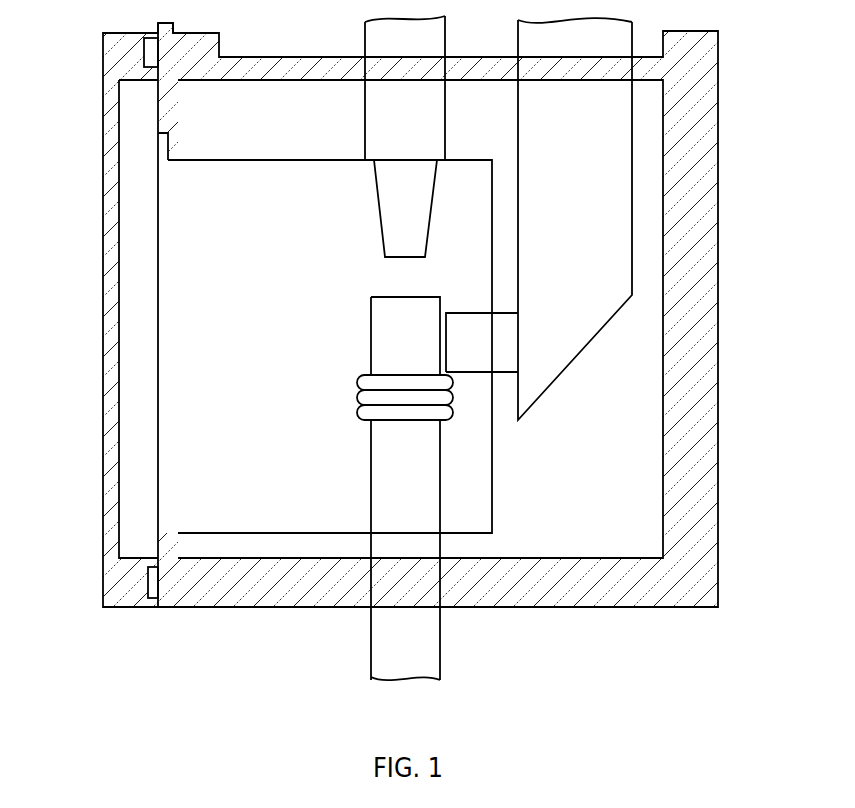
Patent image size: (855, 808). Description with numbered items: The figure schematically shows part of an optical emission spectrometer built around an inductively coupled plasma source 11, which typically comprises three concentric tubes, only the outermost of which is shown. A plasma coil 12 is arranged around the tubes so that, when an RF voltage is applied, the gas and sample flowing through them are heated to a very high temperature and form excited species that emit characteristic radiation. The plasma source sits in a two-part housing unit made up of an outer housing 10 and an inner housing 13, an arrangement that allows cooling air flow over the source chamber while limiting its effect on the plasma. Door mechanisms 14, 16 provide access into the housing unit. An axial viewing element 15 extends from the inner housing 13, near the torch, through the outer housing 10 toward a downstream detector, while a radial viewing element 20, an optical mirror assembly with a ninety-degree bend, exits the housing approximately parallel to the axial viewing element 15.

The outer housing 10 is at (718, 463).
The inductively coupled plasma source 11 is at (371, 482).
The plasma coil 12 is at (357, 382).
The inner housing 13 is at (492, 505).
The door mechanism 14 is at (158, 383).
The axial viewing element 15 is at (365, 148).
The door mechanism 16 is at (103, 472).
The radial viewing element 20 is at (617, 147).